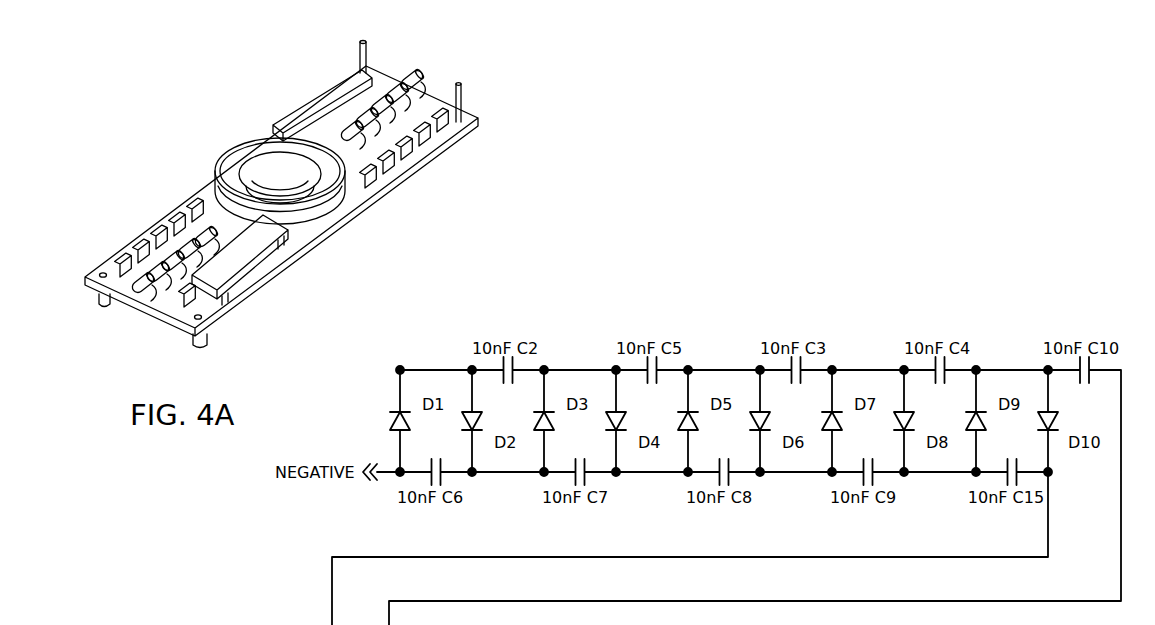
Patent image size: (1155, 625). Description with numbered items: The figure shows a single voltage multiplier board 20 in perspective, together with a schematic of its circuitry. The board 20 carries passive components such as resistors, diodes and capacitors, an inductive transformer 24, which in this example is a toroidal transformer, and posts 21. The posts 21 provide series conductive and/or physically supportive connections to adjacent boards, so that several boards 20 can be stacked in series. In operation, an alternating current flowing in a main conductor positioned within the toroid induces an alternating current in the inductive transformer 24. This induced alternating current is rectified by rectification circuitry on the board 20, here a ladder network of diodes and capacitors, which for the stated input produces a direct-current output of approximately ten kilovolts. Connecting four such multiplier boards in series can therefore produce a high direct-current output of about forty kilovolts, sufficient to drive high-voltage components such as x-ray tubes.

The voltage multiplier board 20 is at (393, 187).
The posts 21 is at (363, 50).
The inductive transformer 24 is at (318, 198).